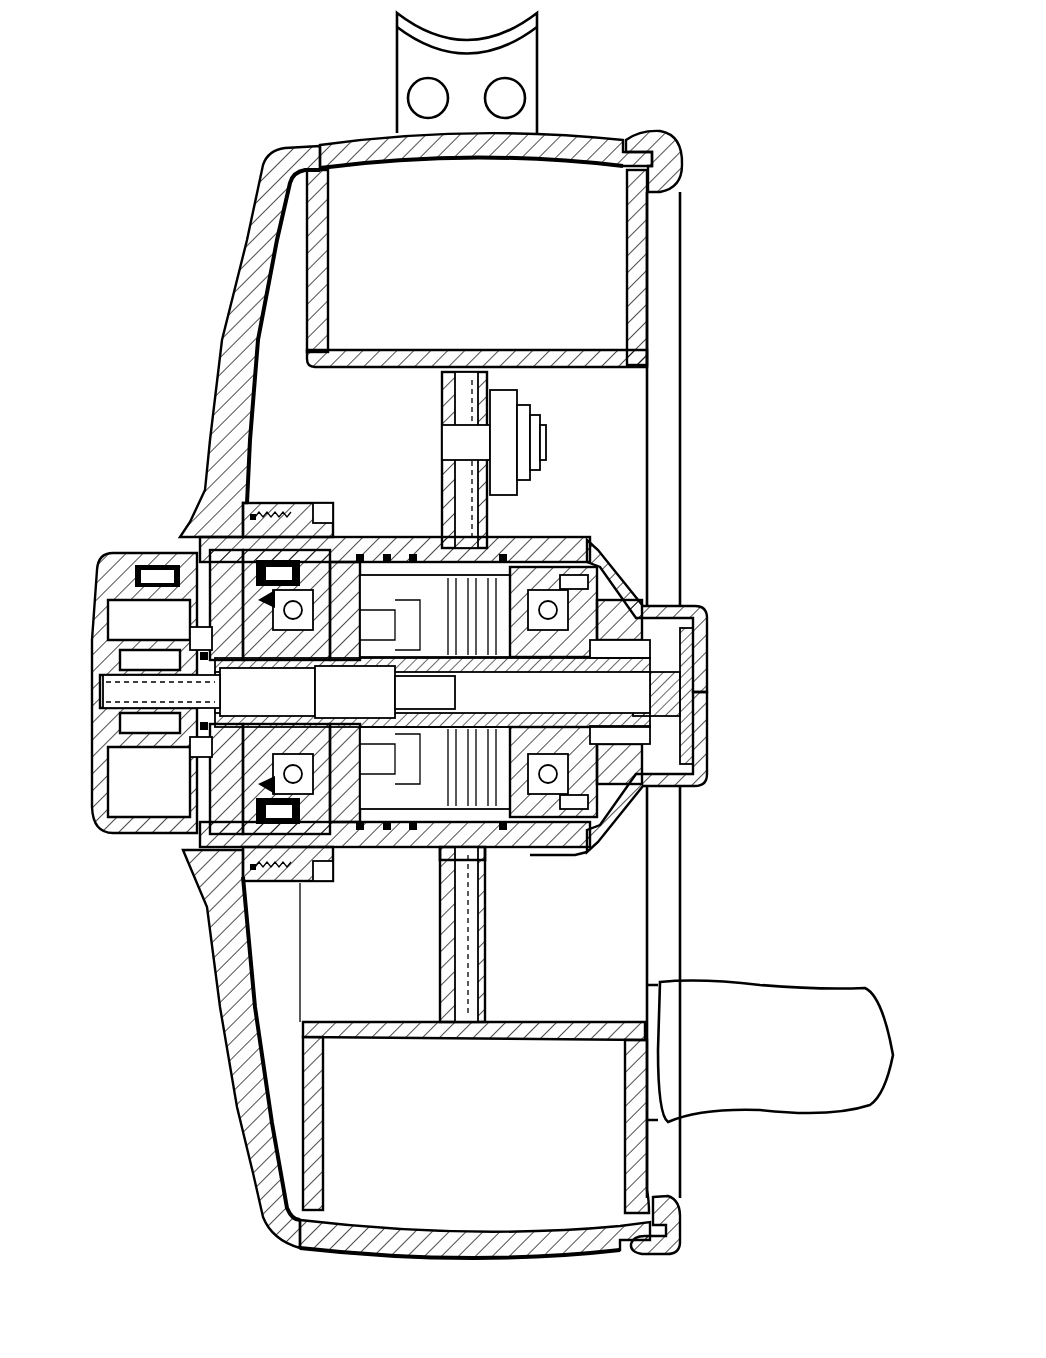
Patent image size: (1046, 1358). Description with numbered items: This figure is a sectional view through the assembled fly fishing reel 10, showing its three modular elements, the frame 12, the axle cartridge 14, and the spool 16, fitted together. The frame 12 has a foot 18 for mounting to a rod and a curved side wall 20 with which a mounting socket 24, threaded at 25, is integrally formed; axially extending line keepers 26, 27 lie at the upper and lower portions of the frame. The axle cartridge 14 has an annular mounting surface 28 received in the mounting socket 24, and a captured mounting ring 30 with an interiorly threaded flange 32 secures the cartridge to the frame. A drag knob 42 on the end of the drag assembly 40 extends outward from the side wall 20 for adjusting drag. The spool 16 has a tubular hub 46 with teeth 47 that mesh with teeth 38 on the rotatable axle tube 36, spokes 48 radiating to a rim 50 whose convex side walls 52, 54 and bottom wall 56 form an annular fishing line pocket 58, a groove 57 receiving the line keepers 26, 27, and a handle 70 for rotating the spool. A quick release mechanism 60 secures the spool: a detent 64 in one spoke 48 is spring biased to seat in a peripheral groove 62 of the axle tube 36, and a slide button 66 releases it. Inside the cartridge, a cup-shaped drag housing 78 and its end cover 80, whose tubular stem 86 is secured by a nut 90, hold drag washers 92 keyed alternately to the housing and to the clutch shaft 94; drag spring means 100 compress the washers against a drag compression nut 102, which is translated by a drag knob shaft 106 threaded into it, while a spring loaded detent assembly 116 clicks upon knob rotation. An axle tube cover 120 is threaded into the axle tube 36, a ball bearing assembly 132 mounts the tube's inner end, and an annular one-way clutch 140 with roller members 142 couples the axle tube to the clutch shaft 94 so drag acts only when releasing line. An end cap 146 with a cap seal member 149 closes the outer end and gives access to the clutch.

The fly fishing reel 10 is at (248, 153).
The frame 12 is at (229, 341).
The axle cartridge 14 is at (414, 694).
The spool 16 is at (684, 292).
The foot 18 is at (479, 73).
The side wall 20 is at (215, 385).
The mounting socket 24 is at (216, 880).
The threads 25 is at (280, 880).
The line keeper 26 is at (585, 142).
The line keeper 27 is at (497, 1230).
The annular mounting surface 28 is at (214, 1049).
The mounting ring 30 is at (257, 514).
The interiorly threaded flange 32 is at (214, 1049).
The axle tube 36 is at (495, 855).
The teeth 38 is at (338, 856).
The drag assembly 40 is at (433, 604).
The drag knob 42 is at (97, 628).
The tubular hub 46 is at (565, 857).
The teeth 47 is at (305, 505).
The spokes 48 is at (442, 410).
The rim 50 is at (430, 73).
The side wall 52 is at (330, 262).
The side wall 54 is at (628, 252).
The bottom wall 56 is at (378, 352).
The groove 57 is at (672, 138).
The annular fishing line pocket 58 is at (477, 268).
The quick release mechanism 60 is at (522, 403).
The peripheral groove 62 is at (446, 852).
The detent 64 is at (464, 544).
The slide button 66 is at (544, 437).
The handle 70 is at (789, 998).
The drag housing 78 is at (505, 580).
The end cover 80 is at (343, 765).
The tubular stem 86 is at (230, 742).
The nut 90 is at (198, 753).
The drag washers 92 is at (468, 758).
The clutch shaft 94 is at (432, 711).
The drag spring means 100 is at (366, 699).
The drag compression nut 102 is at (380, 603).
The drag knob shaft 106 is at (248, 710).
The spring loaded detent assembly 116 is at (188, 566).
The axle tube cover 120 is at (590, 612).
The ball bearing assembly 132 is at (605, 797).
The one-way clutch 140 is at (681, 697).
The one-way roller members 142 is at (625, 652).
The end cap 146 is at (710, 770).
The cap seal member 149 is at (650, 693).